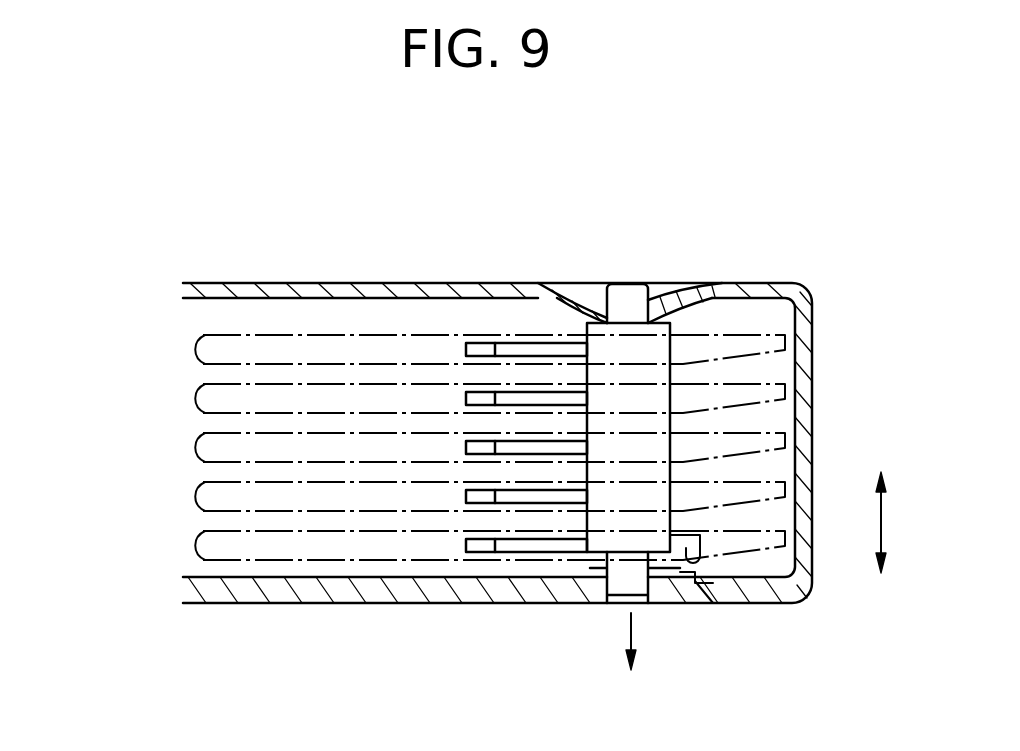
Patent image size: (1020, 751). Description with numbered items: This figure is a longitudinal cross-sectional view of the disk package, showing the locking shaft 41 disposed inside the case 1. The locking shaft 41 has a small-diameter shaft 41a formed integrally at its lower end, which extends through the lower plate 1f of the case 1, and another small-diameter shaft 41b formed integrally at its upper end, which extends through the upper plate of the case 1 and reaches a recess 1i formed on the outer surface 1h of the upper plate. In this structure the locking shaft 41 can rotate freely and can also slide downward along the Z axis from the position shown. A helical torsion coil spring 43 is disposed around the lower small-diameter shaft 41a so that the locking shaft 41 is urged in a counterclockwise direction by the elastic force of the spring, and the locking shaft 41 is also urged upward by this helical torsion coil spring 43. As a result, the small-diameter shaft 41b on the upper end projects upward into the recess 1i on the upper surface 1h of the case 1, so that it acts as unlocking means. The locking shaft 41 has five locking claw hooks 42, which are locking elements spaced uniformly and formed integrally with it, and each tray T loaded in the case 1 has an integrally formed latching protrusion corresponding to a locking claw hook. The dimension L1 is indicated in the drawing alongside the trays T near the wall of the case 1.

The case 1 is at (290, 612).
The lower plate 1f is at (342, 604).
The outer surface of upper plate 1h is at (473, 283).
The recess 1i is at (665, 283).
The locking shaft 41 is at (658, 373).
The small-diameter shaft 41a is at (624, 583).
The small-diameter shaft 41b is at (630, 300).
The locking claw hooks 42 is at (530, 400).
The helical torsion coil spring 43 is at (640, 585).
The tray T is at (192, 350).
The tape path length L1 is at (772, 468).
The Z axis Z is at (895, 522).